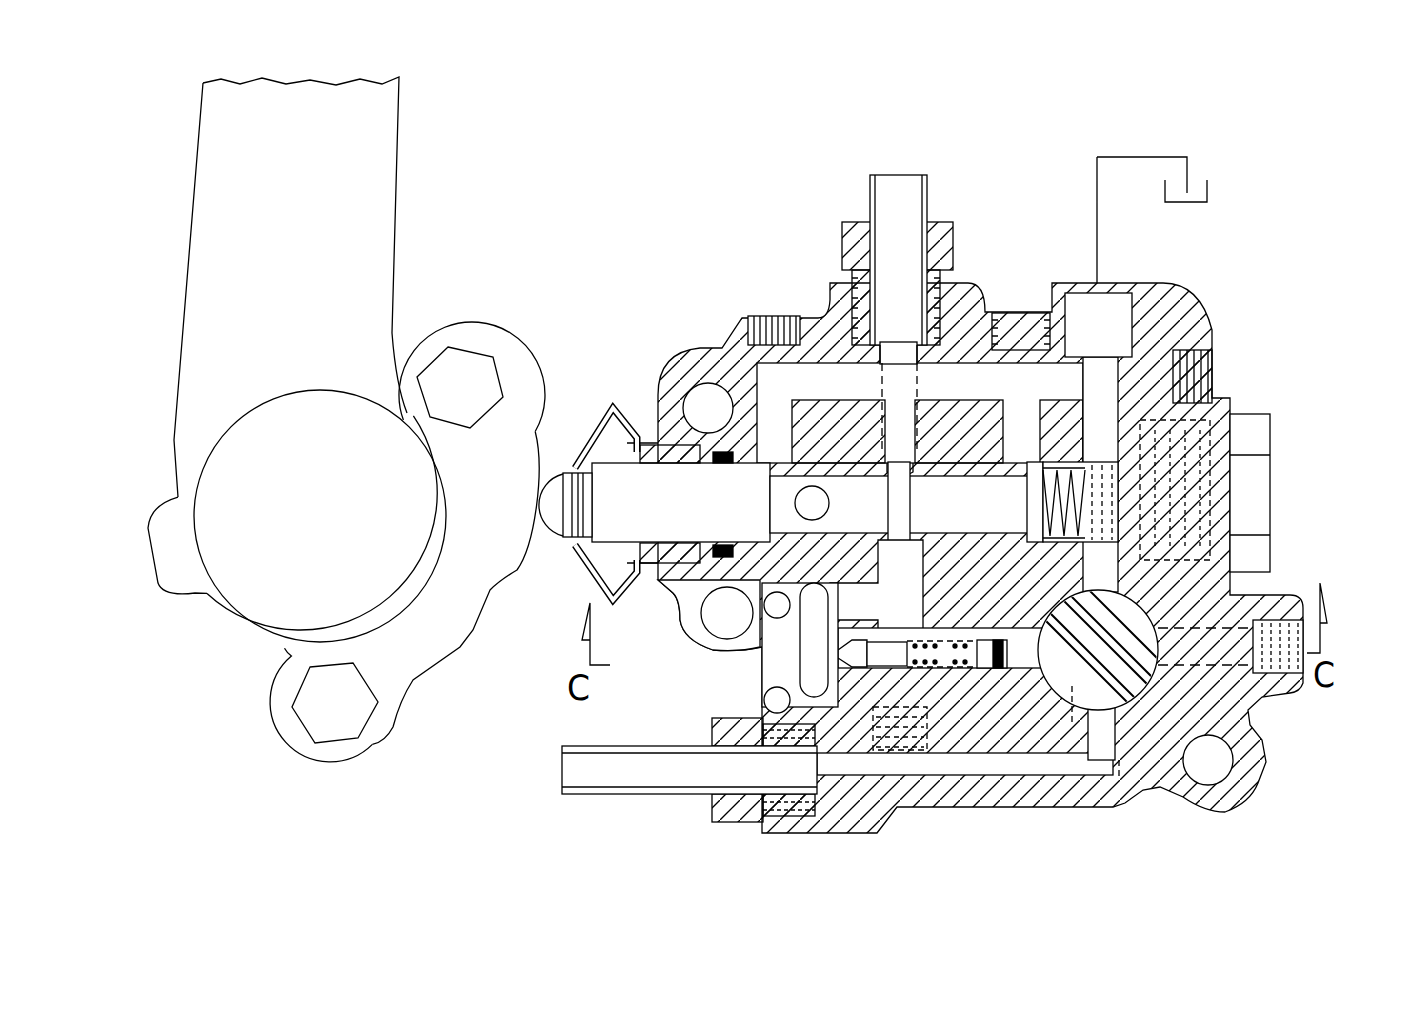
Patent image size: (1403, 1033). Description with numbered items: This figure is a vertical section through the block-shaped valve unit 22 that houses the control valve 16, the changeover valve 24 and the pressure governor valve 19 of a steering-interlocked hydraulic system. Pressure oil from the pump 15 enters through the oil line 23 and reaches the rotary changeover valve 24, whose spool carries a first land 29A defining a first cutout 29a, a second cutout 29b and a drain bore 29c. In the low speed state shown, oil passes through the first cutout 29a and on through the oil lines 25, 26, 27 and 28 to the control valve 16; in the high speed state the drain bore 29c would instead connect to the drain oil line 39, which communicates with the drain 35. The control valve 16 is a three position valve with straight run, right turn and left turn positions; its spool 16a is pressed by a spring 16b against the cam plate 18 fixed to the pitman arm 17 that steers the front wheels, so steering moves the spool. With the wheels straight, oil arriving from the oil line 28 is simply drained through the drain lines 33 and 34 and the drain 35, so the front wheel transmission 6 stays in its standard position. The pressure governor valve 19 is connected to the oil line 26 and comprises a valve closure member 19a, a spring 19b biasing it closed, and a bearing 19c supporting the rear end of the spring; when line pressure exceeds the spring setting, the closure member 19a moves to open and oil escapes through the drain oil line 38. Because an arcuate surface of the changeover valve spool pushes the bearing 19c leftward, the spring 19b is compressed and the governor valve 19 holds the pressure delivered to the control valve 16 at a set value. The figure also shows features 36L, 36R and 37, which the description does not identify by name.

The front wheel transmission 6 is at (895, 175).
The pump 15 is at (548, 770).
The control valve 16 is at (645, 410).
The spool 16a is at (602, 550).
The spring 16b is at (1076, 415).
The pitman arm 17 is at (383, 151).
The cam plate 18 is at (513, 375).
The pressure governor valve 19 is at (1017, 672).
The valve closure member 19a is at (845, 656).
The spring 19b is at (963, 668).
The bearing 19c is at (1003, 643).
The valve unit 22 is at (822, 297).
The oil line 23 is at (1243, 807).
The changeover valve 24 is at (1250, 592).
The oil line 25 is at (855, 693).
The oil line 26 is at (805, 660).
The oil line 27 is at (753, 600).
The oil line 28 is at (906, 546).
The first land 29A is at (1155, 620).
The first cutout 29a is at (1072, 722).
The second cutout 29b is at (1175, 635).
The drain bore 29c is at (1250, 722).
The drain line 33 is at (745, 392).
The drain line 34 is at (1003, 407).
The drain 35 is at (1117, 313).
The left piston 36L is at (975, 490).
The right piston 36R is at (794, 504).
The chamber 37 is at (913, 432).
The drain oil line 38 is at (1031, 531).
The drain oil line 39 is at (1104, 420).